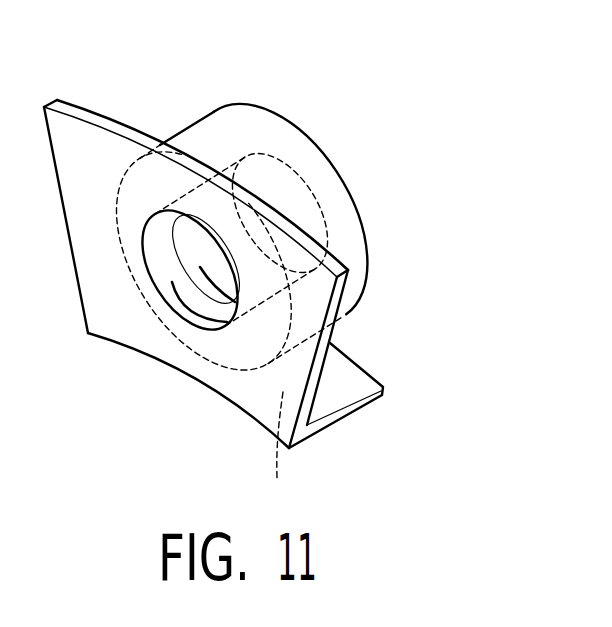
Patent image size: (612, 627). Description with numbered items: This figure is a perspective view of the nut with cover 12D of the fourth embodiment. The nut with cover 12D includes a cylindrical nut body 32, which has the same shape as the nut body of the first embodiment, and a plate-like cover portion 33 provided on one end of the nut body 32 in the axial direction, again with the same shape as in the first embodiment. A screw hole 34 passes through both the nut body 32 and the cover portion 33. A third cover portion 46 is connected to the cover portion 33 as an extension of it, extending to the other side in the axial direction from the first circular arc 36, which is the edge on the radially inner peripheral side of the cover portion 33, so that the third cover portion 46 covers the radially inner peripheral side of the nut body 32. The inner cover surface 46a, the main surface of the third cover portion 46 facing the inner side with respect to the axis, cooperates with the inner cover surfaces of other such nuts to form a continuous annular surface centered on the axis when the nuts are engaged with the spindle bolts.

The nut with cover 12D is at (259, 279).
The nut body 32 is at (283, 138).
The cover portion 33 is at (98, 145).
The screw hole 34 is at (185, 262).
The first circular arc 36 is at (226, 398).
The third cover portion 46 is at (347, 395).
The inner cover surface 46a is at (279, 450).